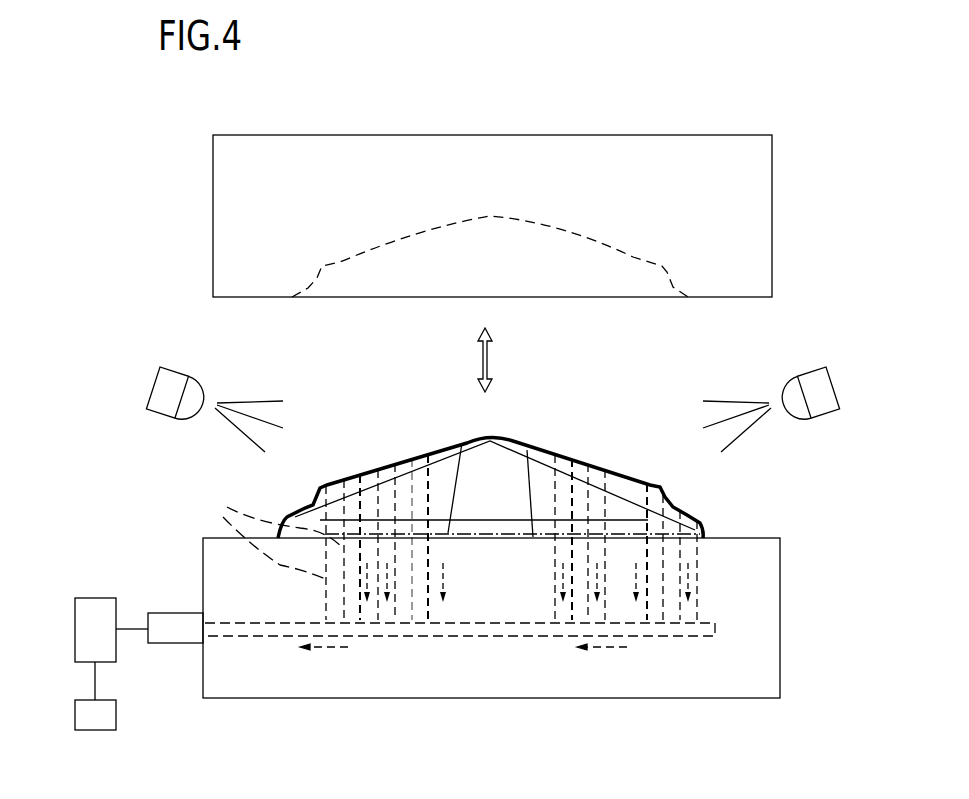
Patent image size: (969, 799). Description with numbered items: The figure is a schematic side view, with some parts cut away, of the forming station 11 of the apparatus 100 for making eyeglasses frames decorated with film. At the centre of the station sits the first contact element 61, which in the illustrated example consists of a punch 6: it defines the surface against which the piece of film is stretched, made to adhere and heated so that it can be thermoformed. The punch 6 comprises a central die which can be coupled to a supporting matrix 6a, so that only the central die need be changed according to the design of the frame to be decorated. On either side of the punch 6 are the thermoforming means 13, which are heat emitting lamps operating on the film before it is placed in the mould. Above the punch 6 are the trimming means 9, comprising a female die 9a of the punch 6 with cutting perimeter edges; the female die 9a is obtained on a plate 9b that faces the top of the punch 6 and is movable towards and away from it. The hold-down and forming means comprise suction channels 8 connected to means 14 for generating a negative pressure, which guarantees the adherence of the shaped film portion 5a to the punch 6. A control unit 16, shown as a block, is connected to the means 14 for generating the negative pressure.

The apparatus 100 is at (175, 105).
The trimming means 9 is at (567, 230).
The female die 9a is at (487, 215).
The plate 9b is at (745, 168).
The forming station 11 is at (758, 335).
The punch 6 is at (710, 510).
The supporting matrix 6a is at (657, 515).
The shaped film portion 5a is at (570, 460).
The first contact element 61 is at (387, 462).
The suction channels 8 is at (216, 498).
The thermoforming means 13 is at (162, 390).
The means for generating a negative pressure 14 is at (83, 641).
The control unit 16 is at (83, 727).